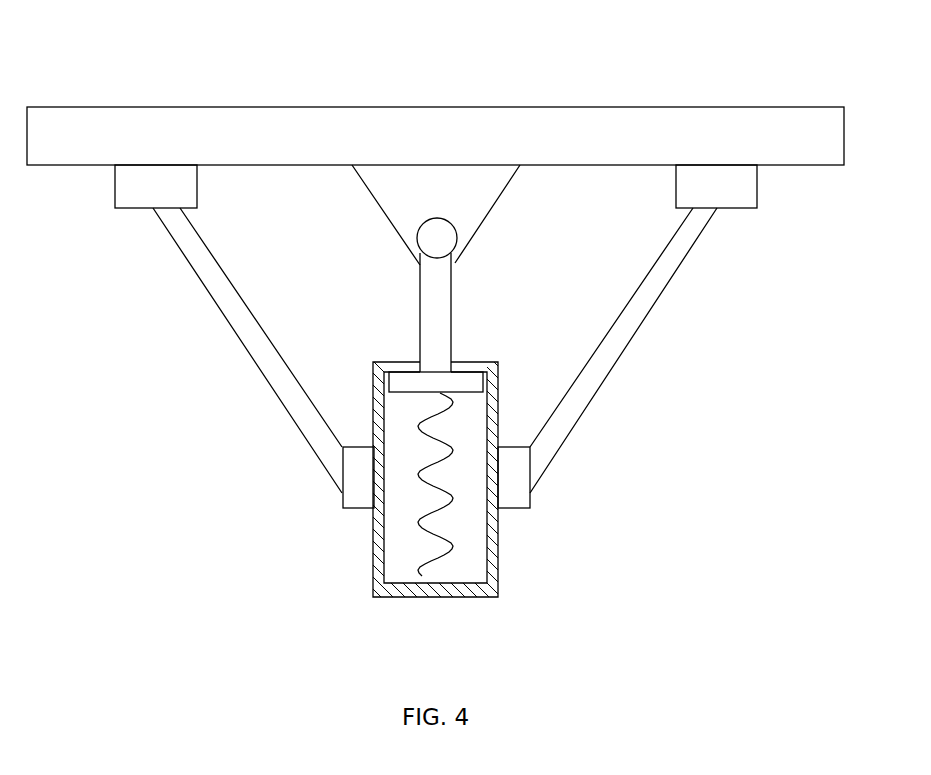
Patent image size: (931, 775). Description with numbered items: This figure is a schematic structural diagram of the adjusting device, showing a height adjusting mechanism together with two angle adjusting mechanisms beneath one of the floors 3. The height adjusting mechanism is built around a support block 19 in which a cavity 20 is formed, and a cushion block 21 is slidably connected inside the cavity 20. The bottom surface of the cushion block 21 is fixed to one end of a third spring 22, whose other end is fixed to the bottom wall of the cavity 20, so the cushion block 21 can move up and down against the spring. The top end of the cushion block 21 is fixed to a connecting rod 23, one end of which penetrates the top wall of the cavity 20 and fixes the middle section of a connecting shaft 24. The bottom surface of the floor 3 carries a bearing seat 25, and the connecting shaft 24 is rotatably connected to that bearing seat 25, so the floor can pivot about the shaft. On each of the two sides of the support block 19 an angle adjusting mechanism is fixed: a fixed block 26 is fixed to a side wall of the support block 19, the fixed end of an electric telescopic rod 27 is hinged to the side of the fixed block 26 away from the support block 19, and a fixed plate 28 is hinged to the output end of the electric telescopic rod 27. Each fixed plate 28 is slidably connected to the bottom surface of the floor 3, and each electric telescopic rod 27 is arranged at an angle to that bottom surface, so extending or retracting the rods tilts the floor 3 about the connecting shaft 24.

The floor 3 is at (255, 125).
The support block 19 is at (375, 572).
The cavity 20 is at (472, 563).
The cushion block 21 is at (457, 380).
The third spring 22 is at (447, 460).
The connecting rod 23 is at (430, 288).
The connecting shaft 24 is at (437, 238).
The bearing seat 25 is at (418, 178).
The fixed block 26 is at (352, 478).
The electric telescopic rod 27 is at (272, 373).
The fixed plate 28 is at (160, 185).